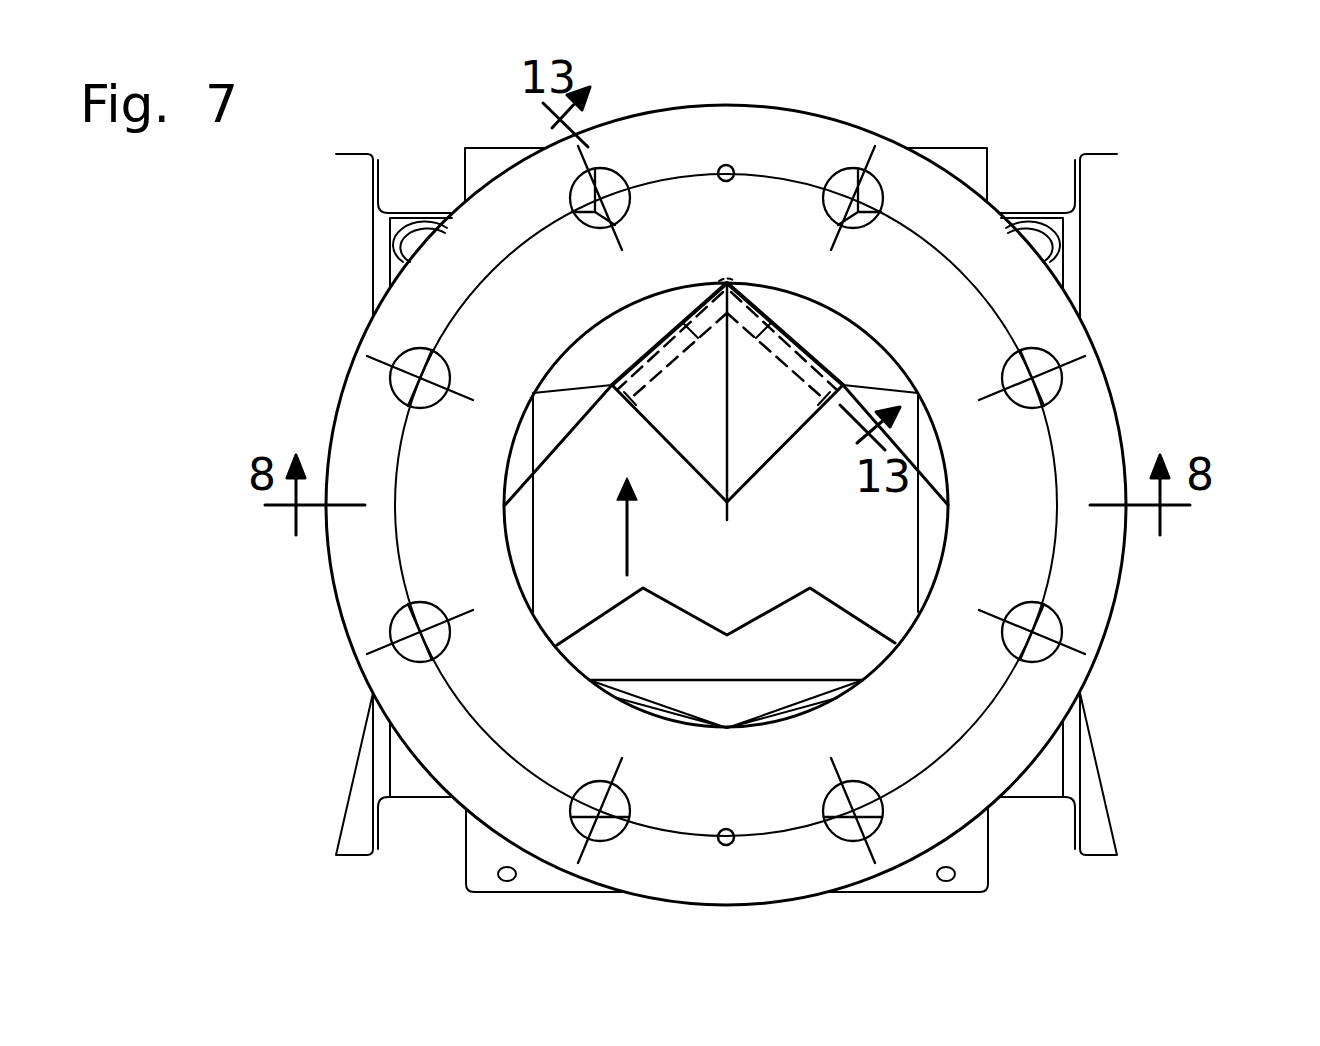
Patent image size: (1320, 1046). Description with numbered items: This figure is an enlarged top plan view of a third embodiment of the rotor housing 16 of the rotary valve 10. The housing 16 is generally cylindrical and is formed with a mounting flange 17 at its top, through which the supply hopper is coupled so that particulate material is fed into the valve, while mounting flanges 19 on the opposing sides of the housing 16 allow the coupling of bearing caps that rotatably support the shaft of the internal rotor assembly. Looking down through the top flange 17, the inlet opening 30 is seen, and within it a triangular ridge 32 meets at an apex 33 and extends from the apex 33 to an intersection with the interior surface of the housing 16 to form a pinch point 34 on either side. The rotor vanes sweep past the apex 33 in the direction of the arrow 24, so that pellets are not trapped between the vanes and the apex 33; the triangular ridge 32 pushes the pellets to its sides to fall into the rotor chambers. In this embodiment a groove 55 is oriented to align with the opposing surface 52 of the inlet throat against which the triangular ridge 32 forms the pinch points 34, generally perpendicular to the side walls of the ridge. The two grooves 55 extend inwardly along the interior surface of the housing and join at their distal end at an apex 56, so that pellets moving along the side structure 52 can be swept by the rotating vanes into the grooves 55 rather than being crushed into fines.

The rotary valve 10 is at (1176, 227).
The housing 16 is at (930, 150).
The mounting flange 17 is at (761, 137).
The mounting flanges 19 is at (1105, 685).
The arrow 24 is at (627, 545).
The inlet opening 30 is at (900, 620).
The triangular ridge 32 is at (752, 425).
The apex 33 is at (728, 507).
The pinch point 34 is at (608, 385).
The opposing surface 52 is at (573, 428).
The groove 55 is at (697, 337).
The apex 56 is at (727, 283).